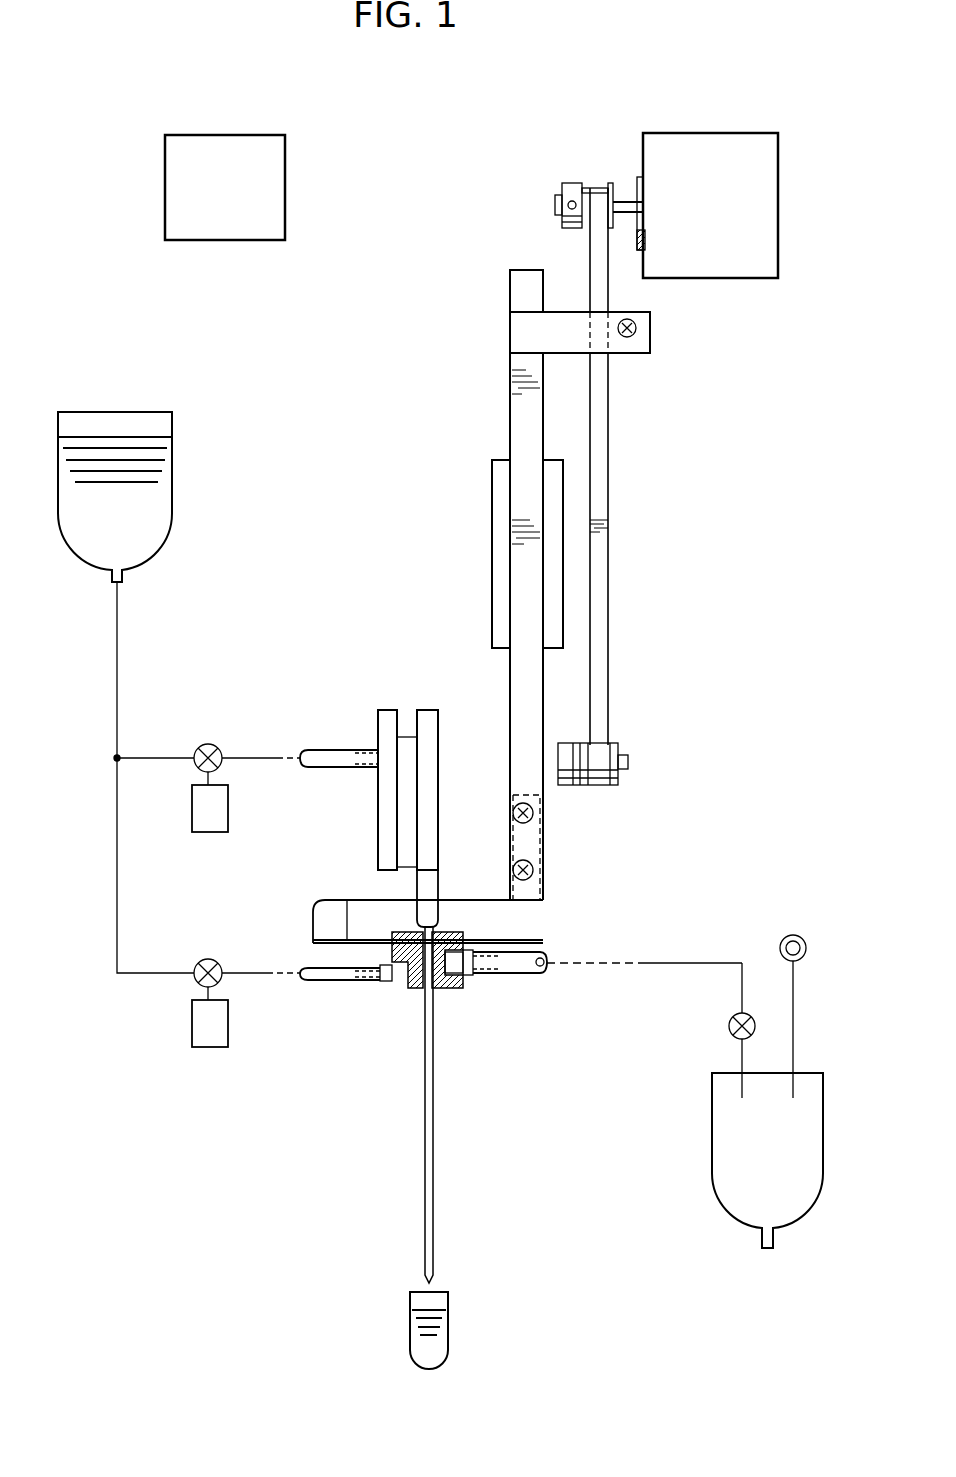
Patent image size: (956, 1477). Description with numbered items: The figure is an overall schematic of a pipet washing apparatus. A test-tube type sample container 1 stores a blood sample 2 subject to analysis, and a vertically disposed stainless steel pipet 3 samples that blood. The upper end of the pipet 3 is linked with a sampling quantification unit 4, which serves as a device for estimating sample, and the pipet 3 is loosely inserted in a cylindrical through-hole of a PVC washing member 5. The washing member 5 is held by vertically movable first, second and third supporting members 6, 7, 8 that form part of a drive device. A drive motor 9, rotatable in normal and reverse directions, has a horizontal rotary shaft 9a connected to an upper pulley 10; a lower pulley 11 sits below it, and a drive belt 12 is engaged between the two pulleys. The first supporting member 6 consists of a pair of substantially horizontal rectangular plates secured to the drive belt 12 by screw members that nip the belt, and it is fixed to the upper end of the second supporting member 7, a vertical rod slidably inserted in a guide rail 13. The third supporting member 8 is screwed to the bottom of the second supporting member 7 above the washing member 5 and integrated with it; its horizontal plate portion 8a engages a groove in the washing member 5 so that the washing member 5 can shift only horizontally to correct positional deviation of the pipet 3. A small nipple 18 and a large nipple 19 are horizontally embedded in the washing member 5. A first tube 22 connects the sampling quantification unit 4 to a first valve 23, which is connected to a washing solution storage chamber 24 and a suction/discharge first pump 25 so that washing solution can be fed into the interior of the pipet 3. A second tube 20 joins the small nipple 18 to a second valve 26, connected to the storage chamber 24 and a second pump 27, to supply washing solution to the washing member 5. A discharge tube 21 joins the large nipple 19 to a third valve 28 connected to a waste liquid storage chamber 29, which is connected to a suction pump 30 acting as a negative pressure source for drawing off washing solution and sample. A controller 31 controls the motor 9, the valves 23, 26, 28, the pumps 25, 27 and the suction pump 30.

The sample container 1 is at (481, 1314).
The blood sample 2 is at (430, 1315).
The pipet 3 is at (433, 1140).
The sampling quantification unit 4 is at (438, 792).
The washing member 5 is at (452, 992).
The first supporting member 6 is at (623, 353).
The second supporting member 7 is at (548, 690).
The third supporting member 8 is at (545, 920).
The horizontal plate portion 8a is at (347, 940).
The drive motor 9 is at (713, 265).
The rotary shaft 9a is at (625, 222).
The upper pulley 10 is at (572, 183).
The lower pulley 11 is at (618, 745).
The drive belt 12 is at (590, 265).
The slide sleeve 13 is at (492, 540).
The small nipple 18 is at (388, 988).
The large nipple 19 is at (470, 985).
The second tube 20 is at (318, 985).
The tube 21 is at (547, 960).
The first tube 22 is at (323, 755).
The first valve 23 is at (208, 744).
The washing solution storage chamber 24 is at (173, 478).
The first pump 25 is at (228, 810).
The second valve 26 is at (212, 962).
The second pump 27 is at (232, 1022).
The third valve 28 is at (732, 1015).
The waste liquid storage chamber 29 is at (739, 1071).
The suction pump 30 is at (790, 935).
The controller 31 is at (225, 135).